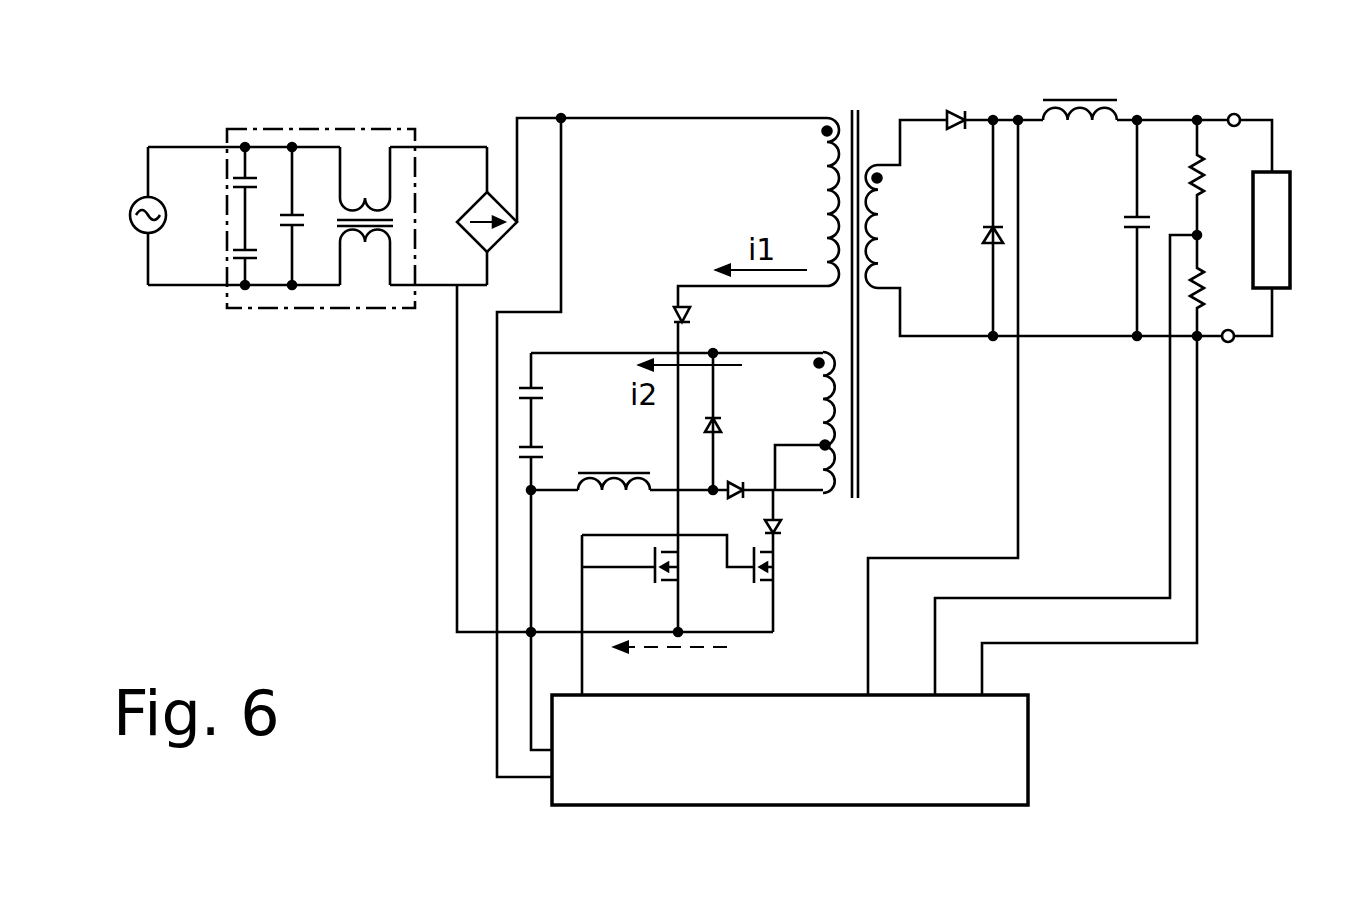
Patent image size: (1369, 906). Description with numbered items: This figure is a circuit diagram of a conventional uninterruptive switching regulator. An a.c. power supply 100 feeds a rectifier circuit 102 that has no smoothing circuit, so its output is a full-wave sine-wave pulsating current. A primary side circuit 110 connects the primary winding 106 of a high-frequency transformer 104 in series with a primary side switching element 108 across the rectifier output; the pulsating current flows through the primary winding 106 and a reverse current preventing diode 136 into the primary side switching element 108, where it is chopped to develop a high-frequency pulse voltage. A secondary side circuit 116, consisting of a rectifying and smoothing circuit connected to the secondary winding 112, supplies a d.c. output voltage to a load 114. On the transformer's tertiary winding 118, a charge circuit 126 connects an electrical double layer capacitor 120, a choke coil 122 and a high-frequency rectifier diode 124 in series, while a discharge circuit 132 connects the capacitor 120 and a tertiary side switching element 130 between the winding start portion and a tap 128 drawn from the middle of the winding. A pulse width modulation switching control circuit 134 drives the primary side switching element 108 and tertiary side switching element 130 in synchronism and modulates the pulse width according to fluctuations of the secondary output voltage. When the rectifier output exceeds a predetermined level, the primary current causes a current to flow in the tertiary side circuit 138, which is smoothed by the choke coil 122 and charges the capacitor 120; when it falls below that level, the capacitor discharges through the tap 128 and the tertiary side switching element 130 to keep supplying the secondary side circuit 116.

The a.c. power supply 100 is at (160, 230).
The rectifier circuit 102 is at (466, 140).
The high-frequency transformer 104 is at (862, 329).
The primary winding 106 is at (832, 118).
The primary side switching element 108 is at (668, 580).
The primary side circuit 110 is at (520, 287).
The secondary winding 112 is at (877, 165).
The load 114 is at (1280, 207).
The secondary side circuit 116 is at (1085, 350).
The tertiary winding 118 is at (833, 495).
The electrical double layer capacitor 120 is at (540, 445).
The choke coil 122 is at (620, 494).
The high-frequency rectifier diode 124 is at (733, 484).
The charge circuit 126 is at (600, 335).
The tap 128 is at (829, 445).
The tertiary side switching element 130 is at (773, 570).
The discharge circuit 132 is at (752, 607).
The switching control circuit 134 is at (953, 787).
The reverse current preventing diode 136 is at (693, 314).
The tertiary side circuit 138 is at (525, 474).